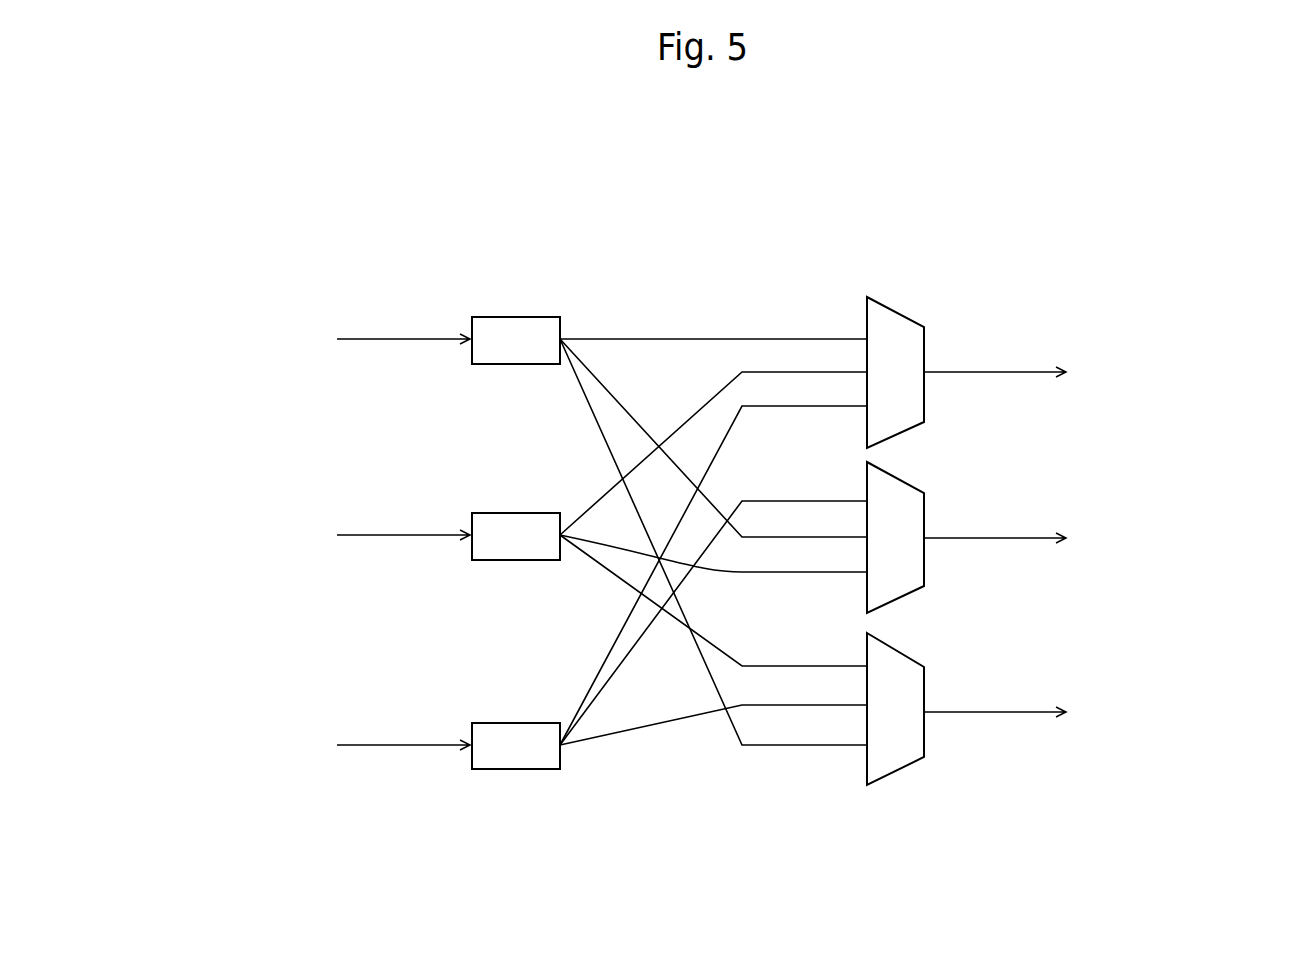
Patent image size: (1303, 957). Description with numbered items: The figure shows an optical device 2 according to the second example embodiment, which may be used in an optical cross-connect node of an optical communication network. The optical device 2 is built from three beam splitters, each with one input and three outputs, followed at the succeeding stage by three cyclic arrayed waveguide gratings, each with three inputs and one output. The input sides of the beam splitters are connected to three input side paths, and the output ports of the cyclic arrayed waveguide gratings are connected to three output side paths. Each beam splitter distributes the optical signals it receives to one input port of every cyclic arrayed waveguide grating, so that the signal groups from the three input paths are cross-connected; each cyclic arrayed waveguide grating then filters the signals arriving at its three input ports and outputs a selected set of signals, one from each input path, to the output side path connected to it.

The optical device 2 is at (910, 203).